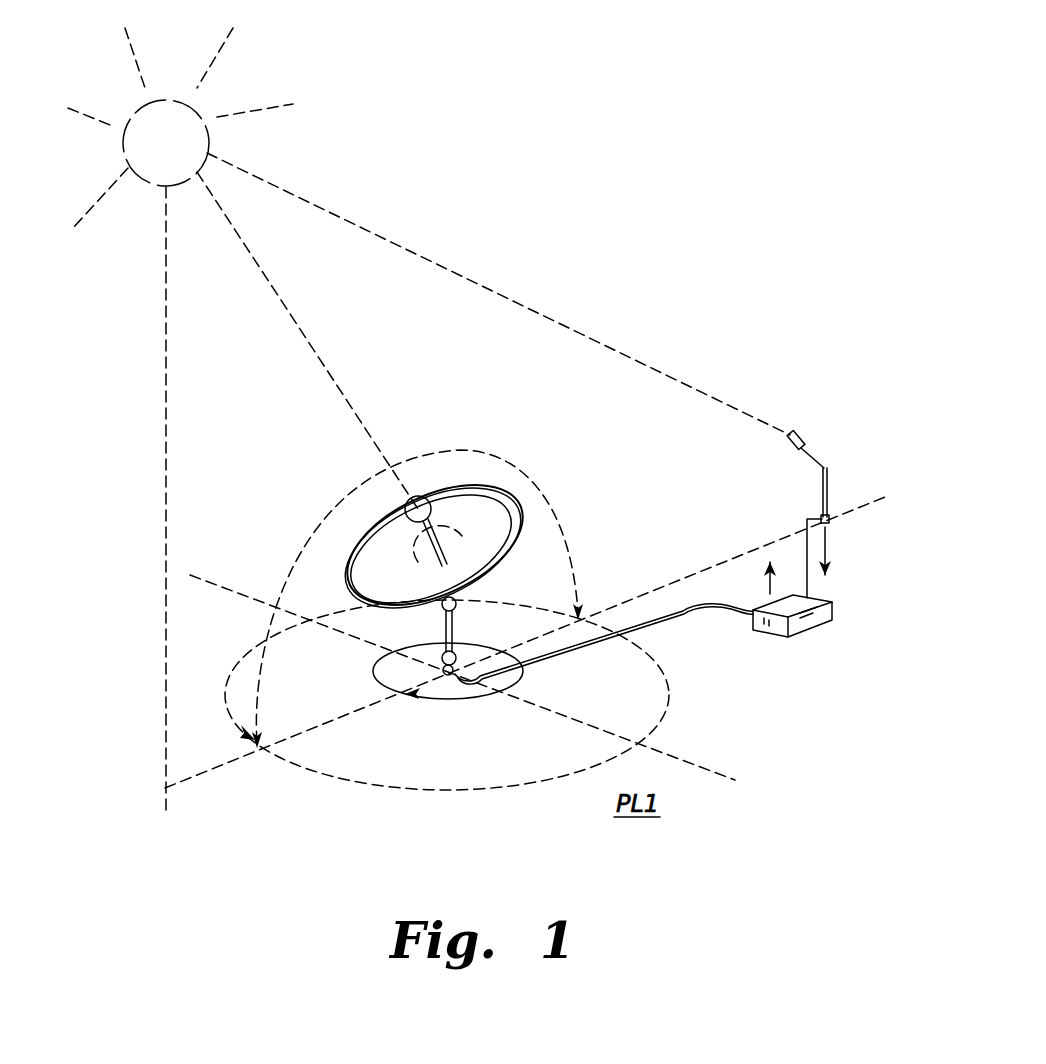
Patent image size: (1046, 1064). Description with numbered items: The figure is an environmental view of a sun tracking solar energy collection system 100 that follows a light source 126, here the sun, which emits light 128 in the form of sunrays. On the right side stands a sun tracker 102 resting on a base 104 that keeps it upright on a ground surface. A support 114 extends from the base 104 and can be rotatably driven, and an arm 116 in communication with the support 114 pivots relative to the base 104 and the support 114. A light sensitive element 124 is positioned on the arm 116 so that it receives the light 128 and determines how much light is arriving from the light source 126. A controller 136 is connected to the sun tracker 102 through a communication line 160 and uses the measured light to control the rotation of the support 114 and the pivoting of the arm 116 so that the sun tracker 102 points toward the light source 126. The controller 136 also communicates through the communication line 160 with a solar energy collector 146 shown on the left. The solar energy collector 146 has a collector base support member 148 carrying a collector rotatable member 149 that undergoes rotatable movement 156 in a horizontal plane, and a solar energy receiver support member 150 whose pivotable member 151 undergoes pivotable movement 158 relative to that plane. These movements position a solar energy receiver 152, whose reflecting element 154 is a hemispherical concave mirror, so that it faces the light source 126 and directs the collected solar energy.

The sun tracking solar energy collection system 100 is at (582, 72).
The sun tracker 102 is at (818, 440).
The base 104 is at (829, 523).
The support 114 is at (835, 480).
The arm 116 is at (808, 455).
The light sensitive element 124 is at (810, 425).
The light source 126 is at (190, 108).
The light 128 is at (307, 202).
The controller 136 is at (833, 622).
The solar energy collector 146 is at (332, 803).
The collector base support member 148 is at (418, 670).
The collector rotatable member 149 is at (467, 652).
The solar energy receiver support member 150 is at (466, 625).
The pivotable member 151 is at (430, 619).
The solar energy receiver 152 is at (375, 545).
The reflecting element 154 is at (372, 572).
The rotatable movement 156 is at (447, 716).
The pivotable movement 158 is at (557, 476).
The communication line 160 is at (806, 519).